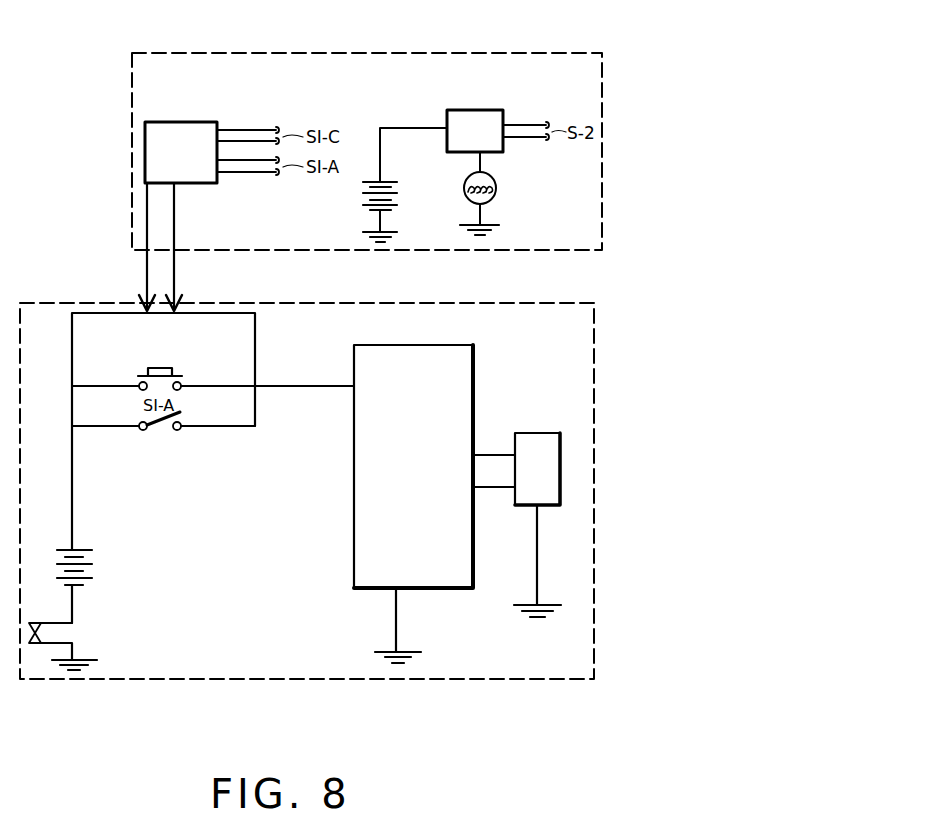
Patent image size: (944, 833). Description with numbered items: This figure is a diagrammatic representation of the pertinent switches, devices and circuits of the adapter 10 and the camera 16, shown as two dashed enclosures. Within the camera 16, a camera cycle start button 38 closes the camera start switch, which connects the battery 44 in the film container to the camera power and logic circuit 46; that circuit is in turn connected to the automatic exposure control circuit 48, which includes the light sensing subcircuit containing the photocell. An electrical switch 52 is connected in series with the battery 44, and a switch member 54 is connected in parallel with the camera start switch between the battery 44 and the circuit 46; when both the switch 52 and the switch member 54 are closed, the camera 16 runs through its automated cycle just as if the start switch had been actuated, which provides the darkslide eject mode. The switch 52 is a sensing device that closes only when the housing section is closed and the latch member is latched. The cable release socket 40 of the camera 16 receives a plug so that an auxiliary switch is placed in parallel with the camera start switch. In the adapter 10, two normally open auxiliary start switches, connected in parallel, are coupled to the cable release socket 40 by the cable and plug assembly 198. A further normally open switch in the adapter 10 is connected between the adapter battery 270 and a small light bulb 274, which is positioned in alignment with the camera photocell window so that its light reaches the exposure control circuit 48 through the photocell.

The adapter 10 is at (487, 53).
The camera 16 is at (595, 660).
The cable and plug assembly 198 is at (162, 266).
The cable release socket 40 is at (180, 305).
The camera cycle start button 38 is at (162, 368).
The switch member 54 is at (162, 426).
The battery 44 is at (87, 570).
The electrical switch 52 is at (42, 633).
The camera power and logic circuit 46 is at (366, 510).
The automatic exposure control circuit 48 is at (545, 507).
The adapter battery 270 is at (395, 186).
The light bulb 274 is at (492, 182).